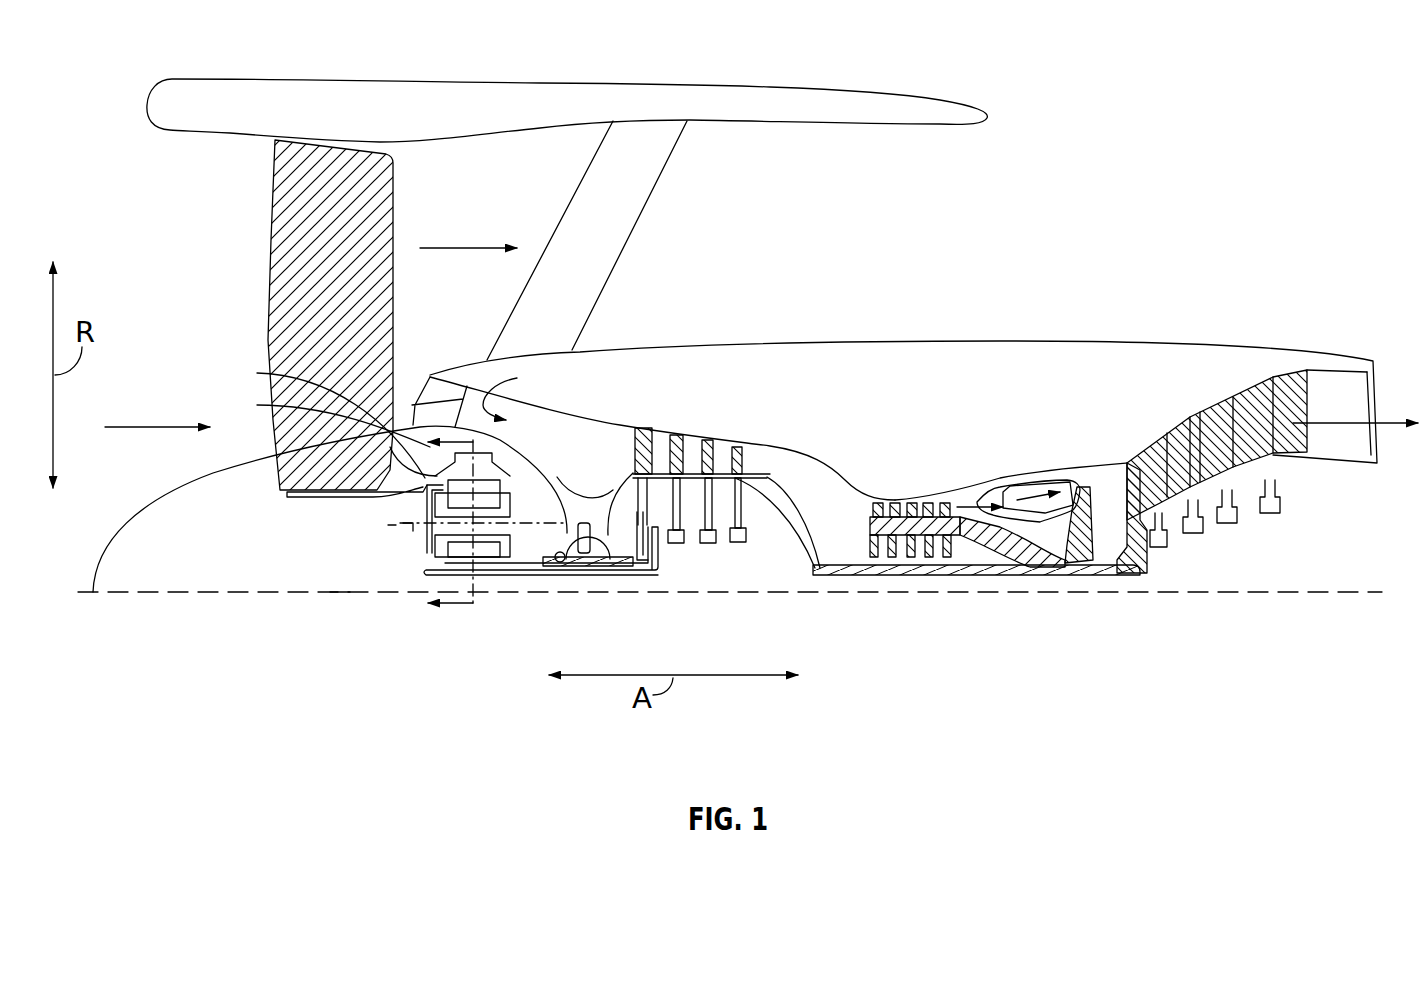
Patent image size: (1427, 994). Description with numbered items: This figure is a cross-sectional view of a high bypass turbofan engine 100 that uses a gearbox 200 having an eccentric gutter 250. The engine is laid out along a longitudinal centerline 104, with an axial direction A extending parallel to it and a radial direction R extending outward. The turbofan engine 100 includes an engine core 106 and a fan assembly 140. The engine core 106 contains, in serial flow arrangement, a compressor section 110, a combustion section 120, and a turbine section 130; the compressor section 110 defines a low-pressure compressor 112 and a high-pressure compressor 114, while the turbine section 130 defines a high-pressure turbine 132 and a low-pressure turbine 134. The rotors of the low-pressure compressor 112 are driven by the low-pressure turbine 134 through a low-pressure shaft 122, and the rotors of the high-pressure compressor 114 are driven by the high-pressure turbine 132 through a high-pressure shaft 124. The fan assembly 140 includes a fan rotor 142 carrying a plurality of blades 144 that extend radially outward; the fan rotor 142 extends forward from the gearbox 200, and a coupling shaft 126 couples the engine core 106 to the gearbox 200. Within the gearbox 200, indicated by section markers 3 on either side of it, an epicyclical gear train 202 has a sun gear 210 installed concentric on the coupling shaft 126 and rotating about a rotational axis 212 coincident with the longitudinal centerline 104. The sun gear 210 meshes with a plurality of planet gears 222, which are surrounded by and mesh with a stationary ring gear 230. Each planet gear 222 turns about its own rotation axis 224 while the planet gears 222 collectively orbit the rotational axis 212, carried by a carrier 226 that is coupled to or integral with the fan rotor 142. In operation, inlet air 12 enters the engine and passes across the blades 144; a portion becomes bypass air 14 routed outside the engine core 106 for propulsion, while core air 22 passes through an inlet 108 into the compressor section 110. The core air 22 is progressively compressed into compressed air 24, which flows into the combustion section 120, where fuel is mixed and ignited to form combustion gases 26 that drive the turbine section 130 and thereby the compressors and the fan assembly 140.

The section line 3- 3 is at (440, 524).
The inlet air 12 is at (160, 425).
The bypass air 14 is at (473, 245).
The core air 22 is at (516, 392).
The compressed air 24 is at (980, 497).
The combustion gases 26 is at (1033, 487).
The turbofan engine 100 is at (1141, 146).
The longitudinal centerline 104 is at (1219, 594).
The engine core 106 is at (841, 366).
The inlet 108 is at (417, 380).
The compressor section 110 is at (888, 416).
The low-pressure compressor 112 is at (709, 419).
The high-pressure compressor 114 is at (893, 500).
The combustion section 120 is at (1054, 406).
The low-pressure shaft 122 is at (1053, 560).
The high-pressure shaft 124 is at (890, 577).
The coupling shaft 126 is at (568, 574).
The turbine section 130 is at (1219, 381).
The high-pressure turbine 132 is at (1080, 485).
The low-pressure turbine 134 is at (1173, 440).
The fan assembly 140 is at (186, 71).
The fan rotor 142 is at (373, 498).
The blades 144 is at (287, 226).
The gearbox 200 is at (501, 542).
The epicyclical gear train 202 is at (442, 560).
The sun gear 210 is at (496, 568).
The rotational axis 212 is at (340, 594).
The planet gears 222 is at (508, 503).
The rotation axis 224 is at (412, 526).
The carrier 226 is at (423, 572).
The ring gear 230 is at (321, 418).
The eccentric gutter 250 is at (319, 417).